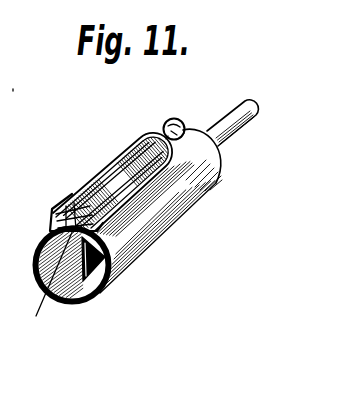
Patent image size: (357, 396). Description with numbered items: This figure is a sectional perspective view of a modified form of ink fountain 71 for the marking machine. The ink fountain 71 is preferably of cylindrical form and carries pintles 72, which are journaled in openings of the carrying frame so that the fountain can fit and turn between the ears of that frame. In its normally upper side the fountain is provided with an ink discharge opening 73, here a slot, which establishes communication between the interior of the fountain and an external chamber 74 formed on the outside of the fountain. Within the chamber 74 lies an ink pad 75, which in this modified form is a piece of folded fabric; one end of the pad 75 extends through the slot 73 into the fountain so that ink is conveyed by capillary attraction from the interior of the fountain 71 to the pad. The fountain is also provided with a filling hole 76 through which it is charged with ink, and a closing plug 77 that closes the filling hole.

The ink fountain 71 is at (163, 237).
The pintles 72 is at (246, 118).
The ink discharge opening 73 is at (64, 287).
The external chamber 74 is at (65, 211).
The ink pad 75 is at (124, 162).
The filling hole 76 is at (192, 130).
The closing plug 77 is at (175, 118).